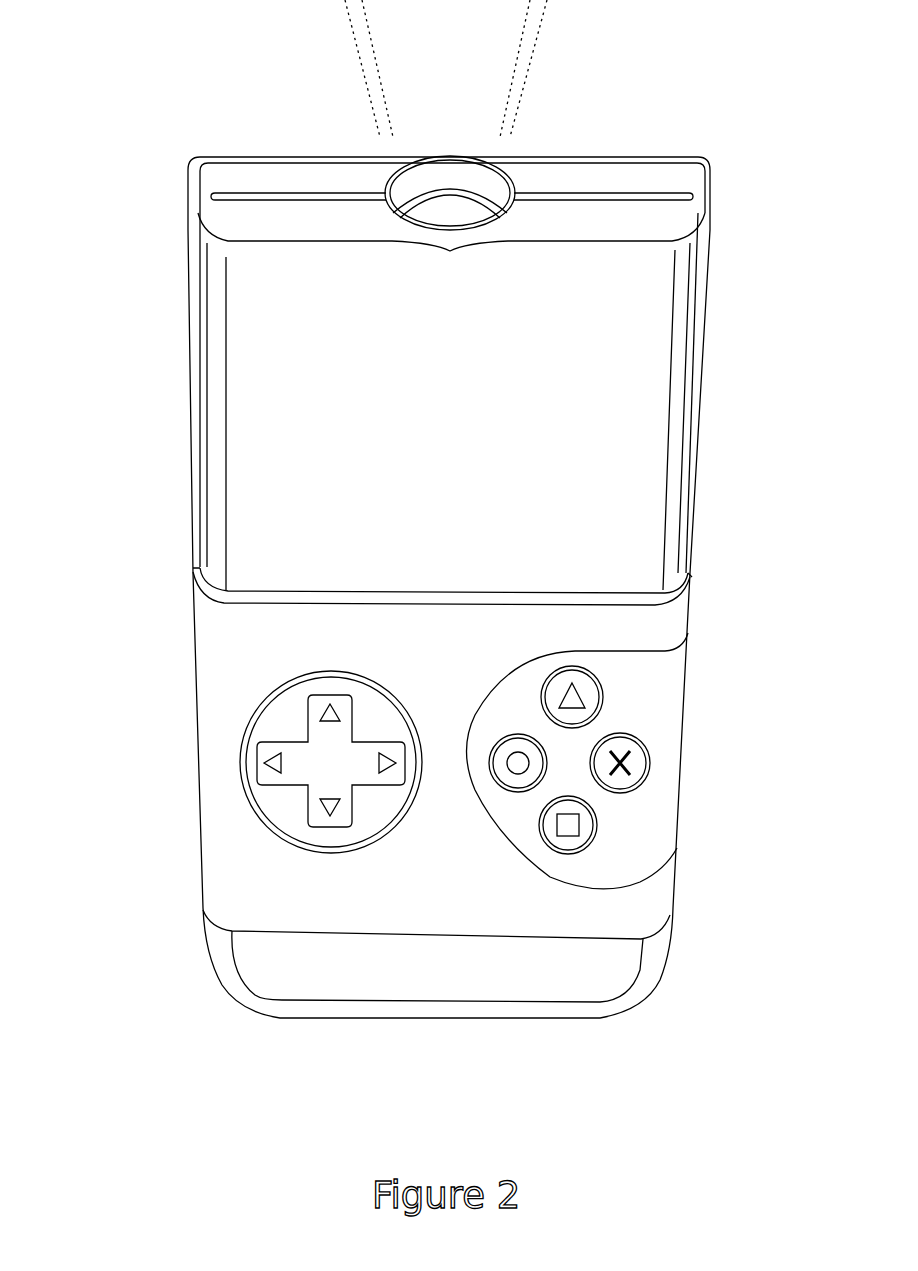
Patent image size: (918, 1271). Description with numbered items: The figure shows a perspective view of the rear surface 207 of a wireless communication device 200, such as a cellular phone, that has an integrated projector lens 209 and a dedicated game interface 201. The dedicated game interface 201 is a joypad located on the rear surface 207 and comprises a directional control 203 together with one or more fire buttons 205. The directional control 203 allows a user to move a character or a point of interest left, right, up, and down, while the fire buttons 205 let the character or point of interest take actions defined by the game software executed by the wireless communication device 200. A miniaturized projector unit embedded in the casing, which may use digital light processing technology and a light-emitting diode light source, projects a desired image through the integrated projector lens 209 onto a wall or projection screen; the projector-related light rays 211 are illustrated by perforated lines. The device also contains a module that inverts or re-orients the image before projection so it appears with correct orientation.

The wireless communication device 200 is at (436, 1136).
The dedicated game interface 201 is at (230, 655).
The directional control 203 is at (287, 802).
The fire buttons 205 is at (617, 688).
The rear surface 207 is at (275, 395).
The integrated projector lens 209 is at (447, 210).
The projector-related light rays 211 is at (355, 72).